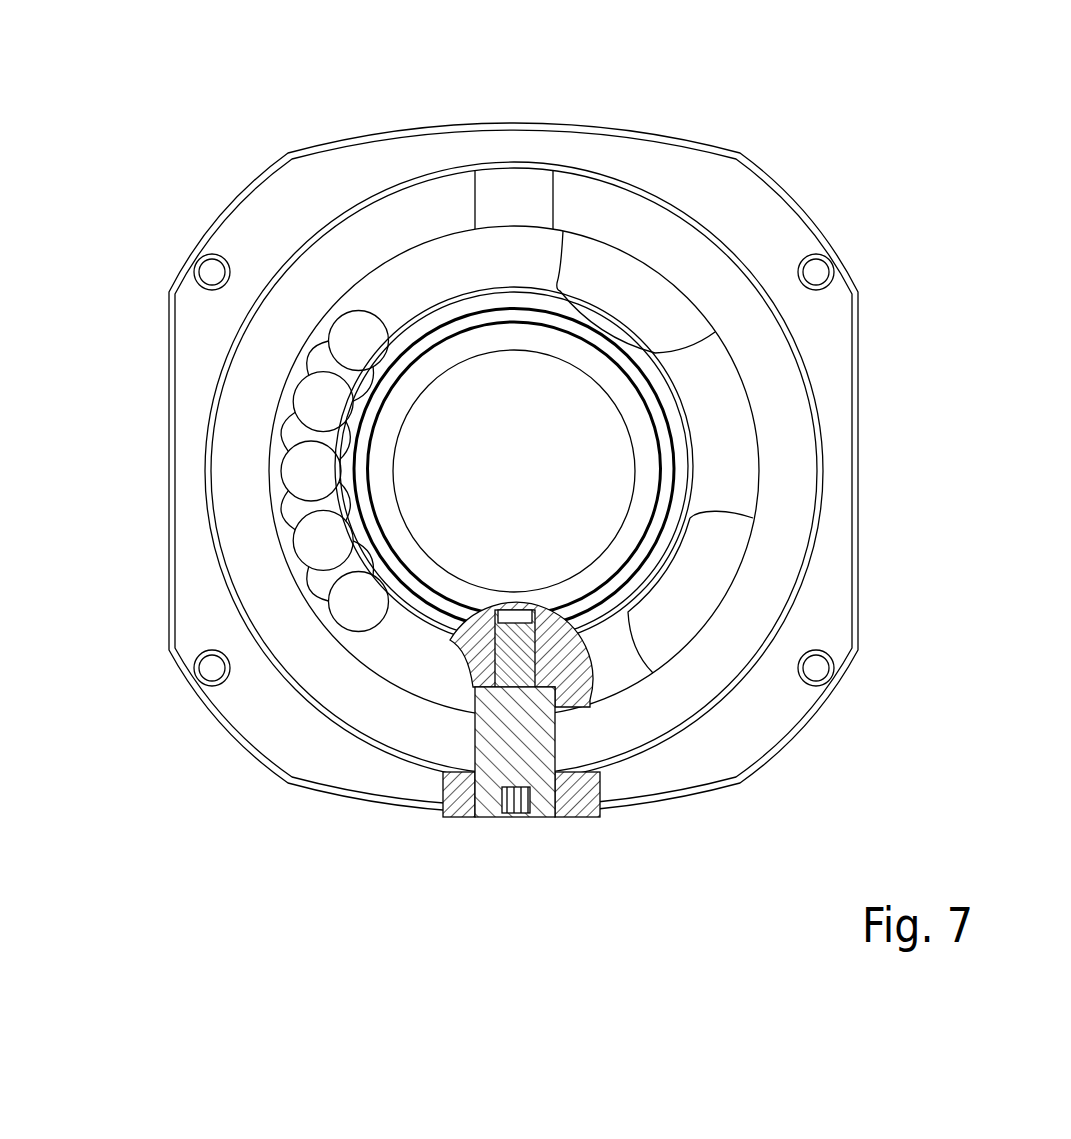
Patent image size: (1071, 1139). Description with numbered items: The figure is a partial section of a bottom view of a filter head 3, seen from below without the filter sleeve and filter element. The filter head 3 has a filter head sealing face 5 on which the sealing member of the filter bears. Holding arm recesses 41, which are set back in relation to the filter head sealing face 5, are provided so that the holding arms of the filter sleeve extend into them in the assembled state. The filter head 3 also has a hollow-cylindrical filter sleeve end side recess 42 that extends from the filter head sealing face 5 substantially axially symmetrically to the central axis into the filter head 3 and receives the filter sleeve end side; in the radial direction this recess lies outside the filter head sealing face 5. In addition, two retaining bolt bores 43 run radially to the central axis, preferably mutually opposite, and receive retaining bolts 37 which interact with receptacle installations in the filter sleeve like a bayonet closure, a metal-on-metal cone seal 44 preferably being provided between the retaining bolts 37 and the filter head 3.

The filter head 3 is at (160, 129).
The filter head sealing face 5 is at (458, 306).
The retaining bolt 37 is at (510, 183).
The holding arm recess 41 is at (635, 293).
The filter sleeve end side recess 42 is at (247, 518).
The retaining bolt bore 43 is at (551, 737).
The metal-on-metal cone seal 44 is at (475, 813).